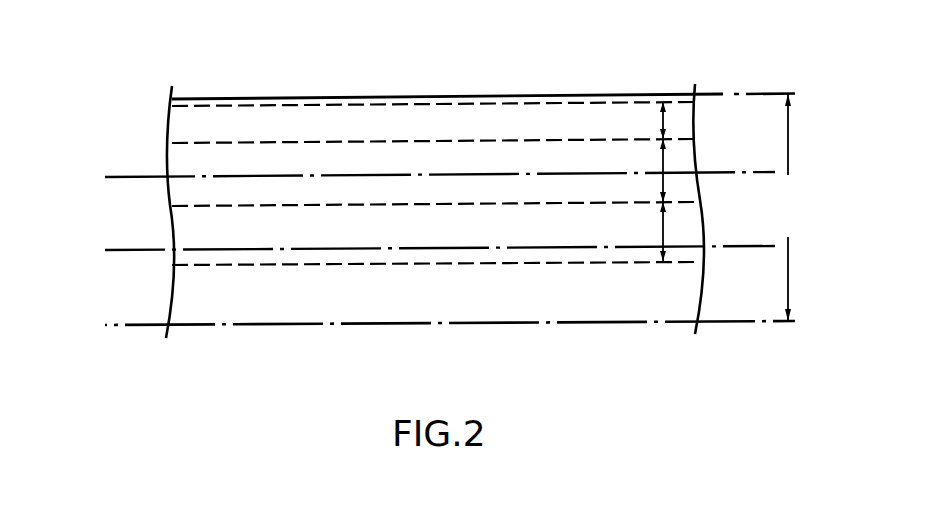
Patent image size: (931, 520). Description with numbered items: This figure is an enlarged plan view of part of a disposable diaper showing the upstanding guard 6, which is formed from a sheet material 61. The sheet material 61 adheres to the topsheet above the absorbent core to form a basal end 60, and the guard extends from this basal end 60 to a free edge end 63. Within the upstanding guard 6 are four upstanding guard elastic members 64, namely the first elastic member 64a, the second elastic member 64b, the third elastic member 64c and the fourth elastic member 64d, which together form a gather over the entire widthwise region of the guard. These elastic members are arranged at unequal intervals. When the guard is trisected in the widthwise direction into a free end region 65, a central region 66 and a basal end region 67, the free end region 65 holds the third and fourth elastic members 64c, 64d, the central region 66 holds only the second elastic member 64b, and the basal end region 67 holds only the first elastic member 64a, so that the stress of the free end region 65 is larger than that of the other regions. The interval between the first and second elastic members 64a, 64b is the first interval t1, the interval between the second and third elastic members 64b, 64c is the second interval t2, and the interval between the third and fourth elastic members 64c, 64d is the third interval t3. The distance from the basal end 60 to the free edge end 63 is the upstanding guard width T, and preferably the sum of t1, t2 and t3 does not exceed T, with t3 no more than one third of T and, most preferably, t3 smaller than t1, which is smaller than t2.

The upstanding guard 6 is at (622, 110).
The basal end 60 is at (441, 328).
The sheet material 61 is at (348, 127).
The free edge end 63 is at (470, 98).
The upstanding guard elastic members 64 is at (78, 83).
The first elastic member 64a is at (186, 266).
The second elastic member 64b is at (186, 207).
The third elastic member 64c is at (186, 144).
The fourth elastic member 64d is at (186, 107).
The free end region 65 is at (814, 94).
The central region 66 is at (814, 180).
The basal end region 67 is at (814, 253).
The first interval t1 is at (663, 225).
The second interval t2 is at (663, 182).
The third interval t3 is at (663, 122).
The upstanding guard width T is at (788, 207).